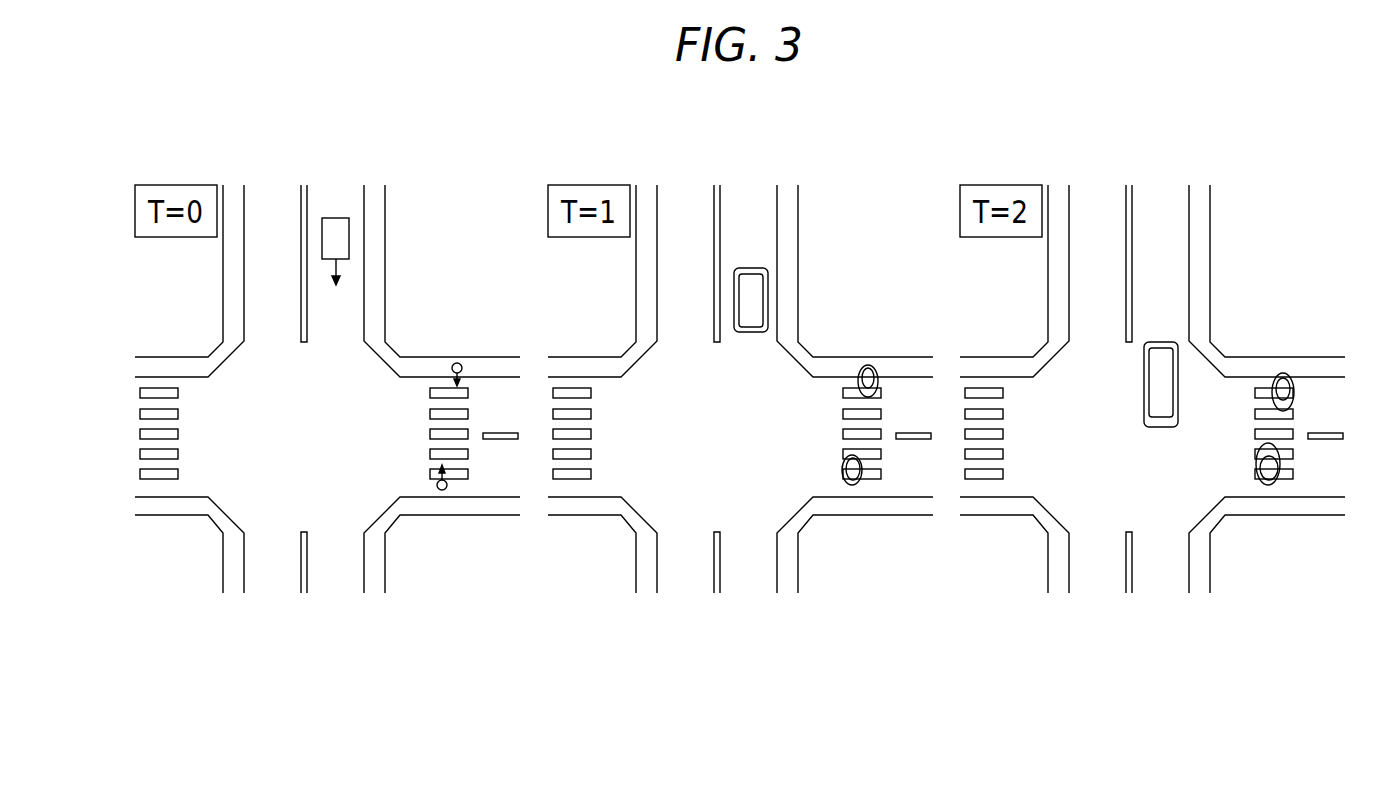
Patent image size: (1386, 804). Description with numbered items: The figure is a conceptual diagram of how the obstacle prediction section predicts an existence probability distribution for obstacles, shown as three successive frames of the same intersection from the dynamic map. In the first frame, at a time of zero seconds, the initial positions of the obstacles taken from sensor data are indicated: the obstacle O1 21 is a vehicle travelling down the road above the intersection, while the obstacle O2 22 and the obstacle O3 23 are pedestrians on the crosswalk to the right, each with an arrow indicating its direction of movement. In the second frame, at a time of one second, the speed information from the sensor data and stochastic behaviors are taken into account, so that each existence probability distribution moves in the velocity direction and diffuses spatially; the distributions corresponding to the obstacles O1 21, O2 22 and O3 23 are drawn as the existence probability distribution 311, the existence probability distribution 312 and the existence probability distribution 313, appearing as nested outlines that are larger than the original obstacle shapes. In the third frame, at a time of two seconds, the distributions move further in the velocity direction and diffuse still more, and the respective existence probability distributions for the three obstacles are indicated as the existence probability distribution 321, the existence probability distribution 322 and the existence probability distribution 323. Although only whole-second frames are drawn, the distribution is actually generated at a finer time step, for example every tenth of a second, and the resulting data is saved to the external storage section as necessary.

The obstacle O1 21 is at (349, 232).
The obstacle O2 22 is at (457, 363).
The obstacle O3 23 is at (442, 490).
The existence probability distribution of obstacle O1 at T=1 311 is at (768, 280).
The existence probability distribution of obstacle O2 at T=1 312 is at (868, 365).
The existence probability distribution of obstacle O3 at T=1 313 is at (853, 485).
The existence probability distribution of obstacle O1 at T=2 321 is at (1178, 370).
The existence probability distribution of obstacle O2 at T=2 322 is at (1282, 373).
The existence probability distribution of obstacle O3 at T=2 323 is at (1271, 485).